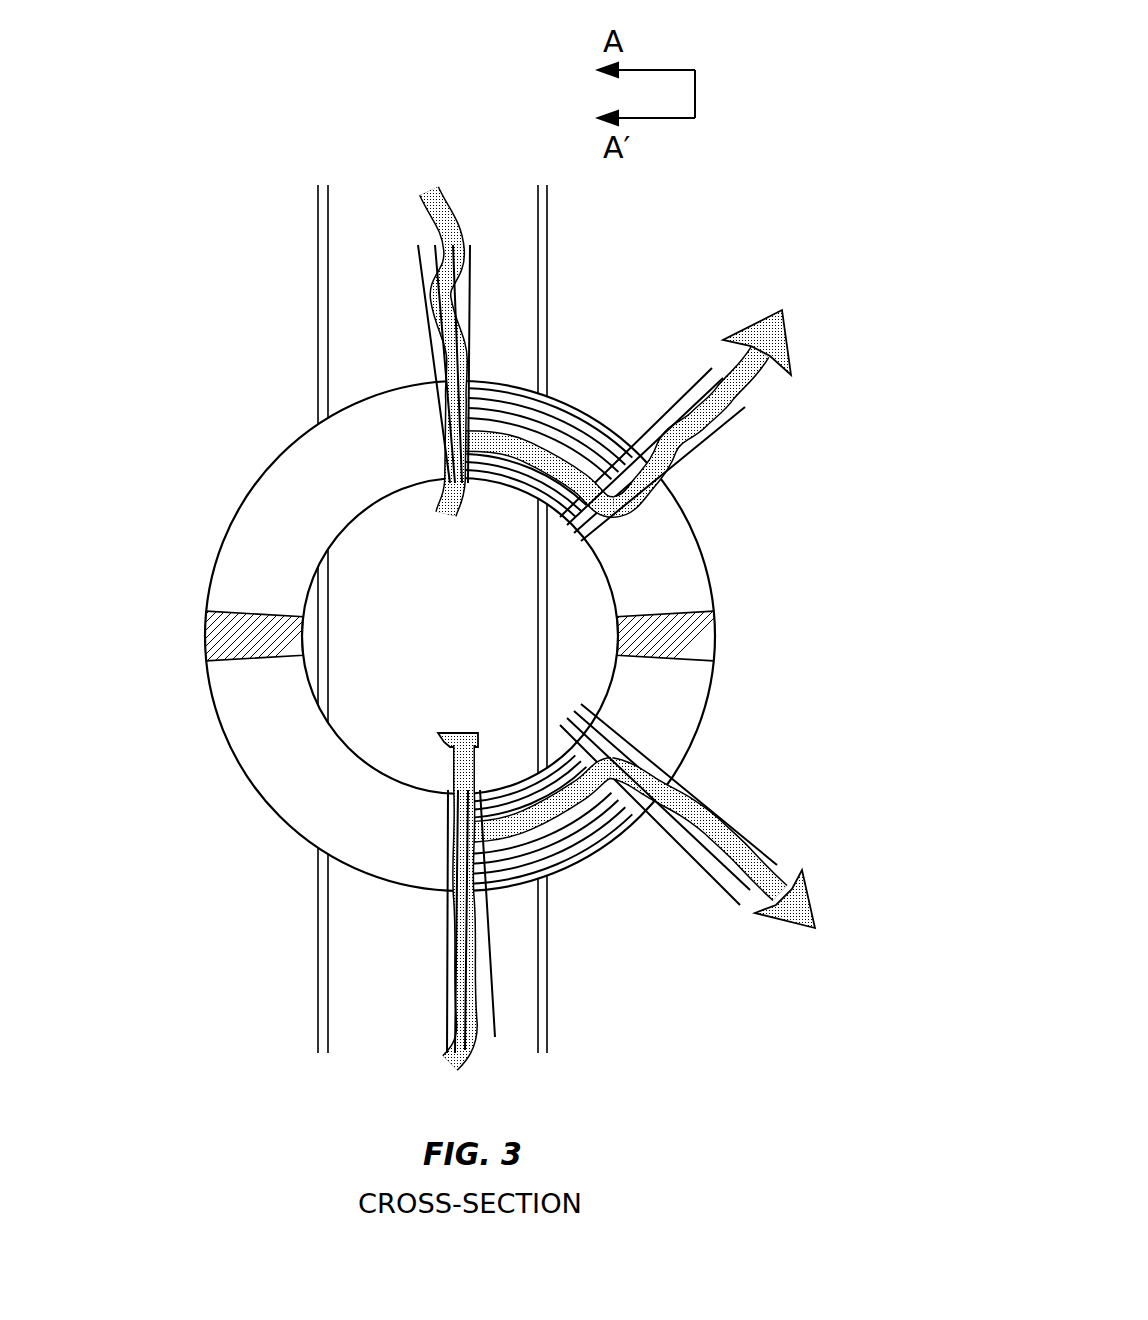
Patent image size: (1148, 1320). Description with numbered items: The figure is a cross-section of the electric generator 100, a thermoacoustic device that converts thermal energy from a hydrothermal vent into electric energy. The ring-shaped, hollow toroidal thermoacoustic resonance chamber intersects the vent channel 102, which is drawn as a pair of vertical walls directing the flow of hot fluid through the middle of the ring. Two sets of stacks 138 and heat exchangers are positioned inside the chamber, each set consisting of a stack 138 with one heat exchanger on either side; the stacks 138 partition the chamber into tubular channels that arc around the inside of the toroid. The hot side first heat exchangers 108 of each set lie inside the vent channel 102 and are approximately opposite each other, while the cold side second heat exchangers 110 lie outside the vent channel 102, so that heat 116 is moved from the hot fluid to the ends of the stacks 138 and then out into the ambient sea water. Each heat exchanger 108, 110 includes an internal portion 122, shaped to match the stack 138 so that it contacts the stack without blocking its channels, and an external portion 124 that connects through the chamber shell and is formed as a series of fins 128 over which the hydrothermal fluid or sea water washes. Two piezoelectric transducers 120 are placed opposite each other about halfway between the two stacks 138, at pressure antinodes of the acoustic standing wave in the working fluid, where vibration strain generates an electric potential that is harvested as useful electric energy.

The tissue ablation device assembly 100 is at (221, 359).
The channel 102 is at (318, 225).
The first heat exchanger 108 is at (427, 303).
The second heat exchanger 110 is at (687, 398).
The heat 116 is at (424, 192).
The piezoelectric transducer 120 is at (205, 636).
The internal portion 122 is at (447, 438).
The external portion 124 is at (471, 342).
The fins 128 is at (470, 244).
The stack 138 is at (556, 401).